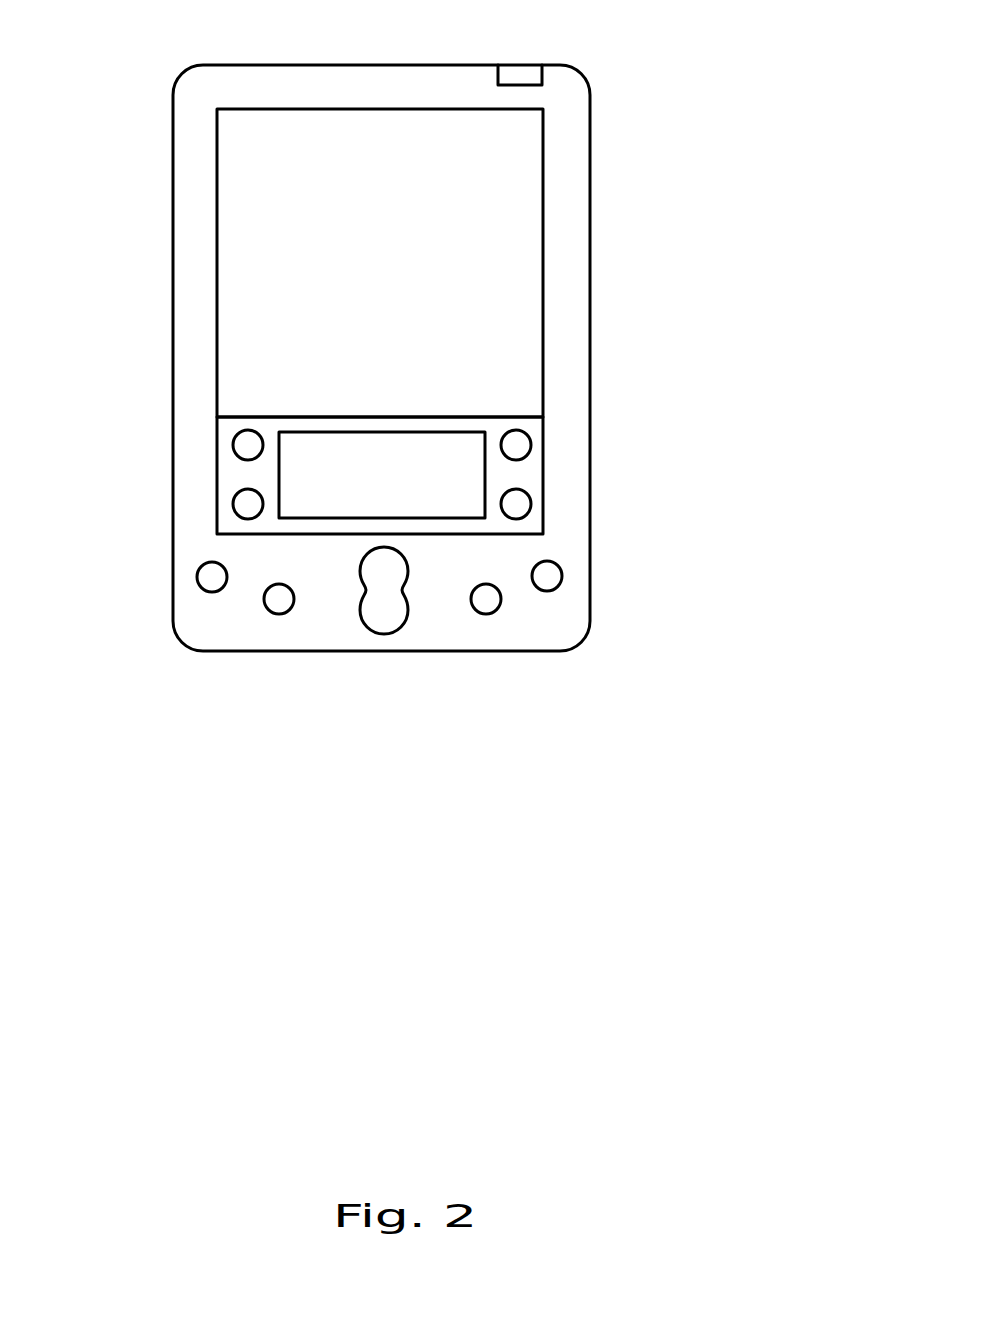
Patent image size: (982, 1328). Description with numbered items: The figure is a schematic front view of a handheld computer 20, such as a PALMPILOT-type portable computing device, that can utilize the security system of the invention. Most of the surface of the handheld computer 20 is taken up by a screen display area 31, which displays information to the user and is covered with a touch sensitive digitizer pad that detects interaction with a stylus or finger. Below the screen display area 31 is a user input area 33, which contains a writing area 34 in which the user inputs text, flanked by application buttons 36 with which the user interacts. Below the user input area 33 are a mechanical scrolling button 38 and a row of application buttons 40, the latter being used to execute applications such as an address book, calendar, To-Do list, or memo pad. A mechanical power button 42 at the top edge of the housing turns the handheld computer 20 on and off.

The handheld computer 20 is at (589, 209).
The screen display area 31 is at (232, 152).
The user input area 33 is at (457, 418).
The writing area 34 is at (295, 460).
The application buttons 36 is at (246, 445).
The mechanical scrolling button 38 is at (383, 620).
The application buttons 40 is at (212, 580).
The mechanical power button 42 is at (520, 72).